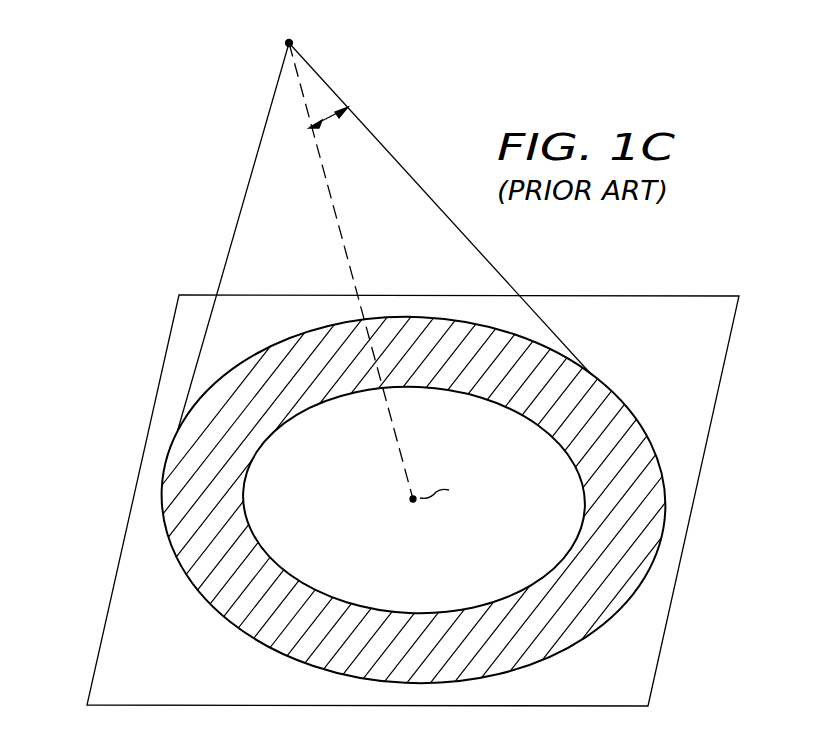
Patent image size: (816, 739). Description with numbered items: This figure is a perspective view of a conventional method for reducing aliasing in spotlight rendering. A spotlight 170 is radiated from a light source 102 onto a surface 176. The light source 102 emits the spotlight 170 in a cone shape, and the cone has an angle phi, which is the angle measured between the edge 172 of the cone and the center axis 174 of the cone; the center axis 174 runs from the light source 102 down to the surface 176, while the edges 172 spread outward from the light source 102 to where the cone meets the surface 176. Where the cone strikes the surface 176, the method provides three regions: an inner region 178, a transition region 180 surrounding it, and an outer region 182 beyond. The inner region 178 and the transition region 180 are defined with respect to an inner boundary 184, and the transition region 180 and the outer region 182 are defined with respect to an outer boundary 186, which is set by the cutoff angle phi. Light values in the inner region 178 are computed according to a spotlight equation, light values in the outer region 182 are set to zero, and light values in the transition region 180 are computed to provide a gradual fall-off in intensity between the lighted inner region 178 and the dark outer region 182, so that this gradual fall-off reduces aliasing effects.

The spotlight 170 is at (97, 156).
The light source 102 is at (286, 42).
The edge of the cone 172 is at (248, 180).
The center axis of the cone 174 is at (352, 272).
The surface 176 is at (653, 296).
The inner region 178 is at (436, 566).
The transition region 180 is at (608, 597).
The outer region 182 is at (636, 690).
The inner boundary 184 is at (257, 450).
The outer boundary 186 is at (228, 621).